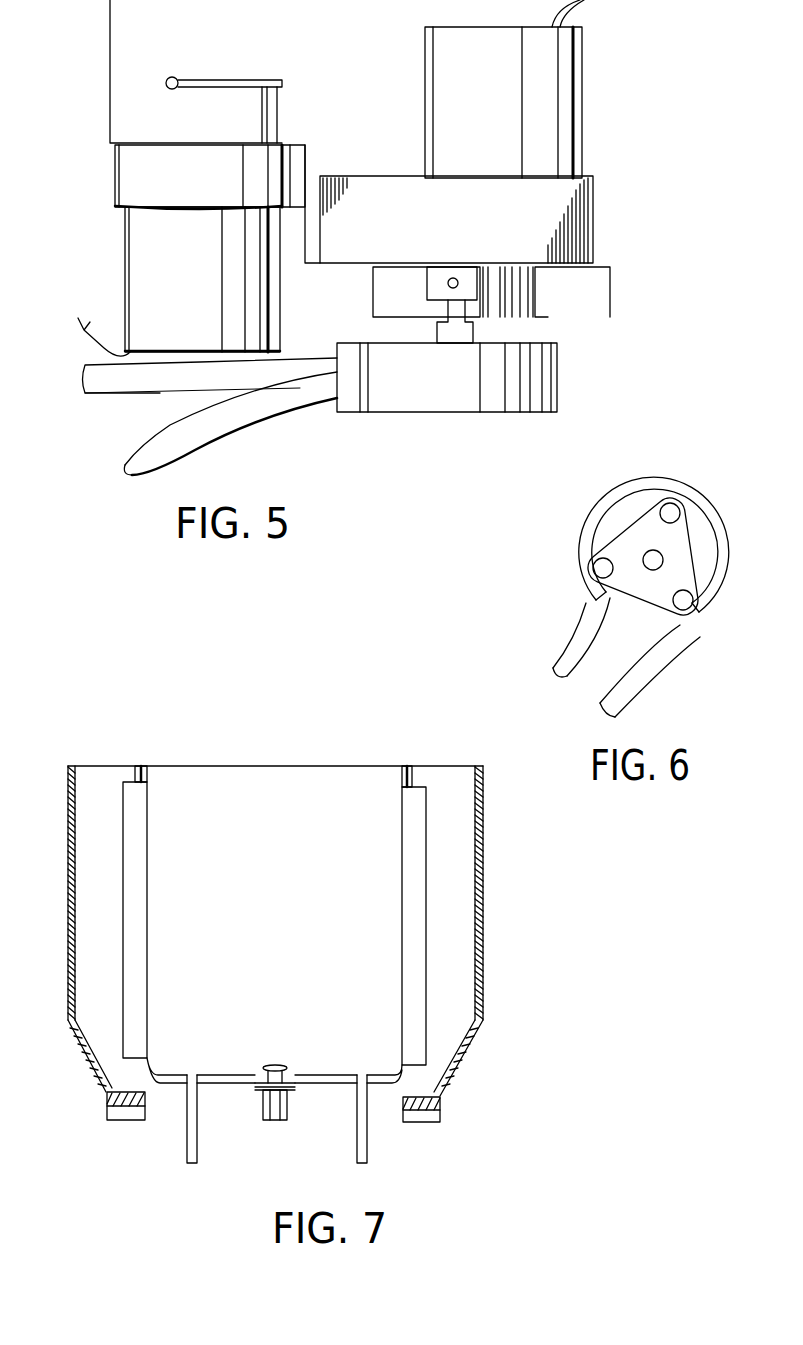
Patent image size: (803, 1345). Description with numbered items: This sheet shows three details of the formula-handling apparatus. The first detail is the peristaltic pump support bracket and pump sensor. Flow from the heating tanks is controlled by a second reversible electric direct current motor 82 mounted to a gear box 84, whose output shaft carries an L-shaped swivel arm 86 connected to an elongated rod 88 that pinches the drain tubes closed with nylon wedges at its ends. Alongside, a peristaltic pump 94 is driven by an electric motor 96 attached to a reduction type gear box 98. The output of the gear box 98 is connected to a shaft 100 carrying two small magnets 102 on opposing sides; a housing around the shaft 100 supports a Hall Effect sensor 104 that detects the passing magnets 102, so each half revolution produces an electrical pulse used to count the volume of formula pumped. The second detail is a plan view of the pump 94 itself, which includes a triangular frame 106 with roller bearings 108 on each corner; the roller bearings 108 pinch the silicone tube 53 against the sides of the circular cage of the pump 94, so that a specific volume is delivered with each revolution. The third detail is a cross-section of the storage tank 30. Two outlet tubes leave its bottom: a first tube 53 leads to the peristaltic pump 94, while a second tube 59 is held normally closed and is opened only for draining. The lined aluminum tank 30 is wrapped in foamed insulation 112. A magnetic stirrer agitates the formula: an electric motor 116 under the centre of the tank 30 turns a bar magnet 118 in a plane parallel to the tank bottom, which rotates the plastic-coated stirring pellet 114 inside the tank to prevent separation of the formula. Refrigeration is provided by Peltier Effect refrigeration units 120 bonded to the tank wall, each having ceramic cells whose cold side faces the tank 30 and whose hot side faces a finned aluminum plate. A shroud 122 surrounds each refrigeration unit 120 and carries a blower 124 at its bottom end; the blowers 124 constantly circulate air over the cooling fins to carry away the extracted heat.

In FIG. 7, the storage tank 30 is at (218, 786).
In FIG. 5, the formula supply tube 53 is at (140, 445).
In FIG. 6, the formula supply tube 53 is at (566, 650).
In FIG. 7, the formula supply tube 53 is at (197, 1150).
In FIG. 7, the second tube 59 is at (367, 1150).
In FIG. 5, the second reversible electric direct current motor 82 is at (140, 258).
In FIG. 5, the gear box 84 is at (132, 177).
In FIG. 5, the L-shaped swivel arm 86 is at (255, 82).
In FIG. 5, the elongated rod 88 is at (172, 77).
In FIG. 5, the peristaltic pump 94 is at (427, 385).
In FIG. 6, the peristaltic pump 94 is at (712, 512).
In FIG. 5, the electric motor 96 is at (555, 103).
In FIG. 5, the reduction type gear box 98 is at (567, 248).
In FIG. 5, the shaft 100 is at (510, 305).
In FIG. 5, the small magnets 102 is at (445, 284).
In FIG. 5, the Hall Effect sensor 104 is at (652, 348).
In FIG. 6, the triangular frame 106 is at (628, 562).
In FIG. 6, the roller bearings 108 is at (682, 503).
In FIG. 7, the foamed insulation 112 is at (407, 764).
In FIG. 7, the stirring pellet 114 is at (283, 1066).
In FIG. 7, the electric motor 116 is at (268, 1122).
In FIG. 7, the bar magnet 118 is at (292, 1088).
In FIG. 7, the refrigeration units 120 is at (137, 932).
In FIG. 7, the shroud 122 is at (480, 1000).
In FIG. 7, the blowers 124 is at (110, 1112).